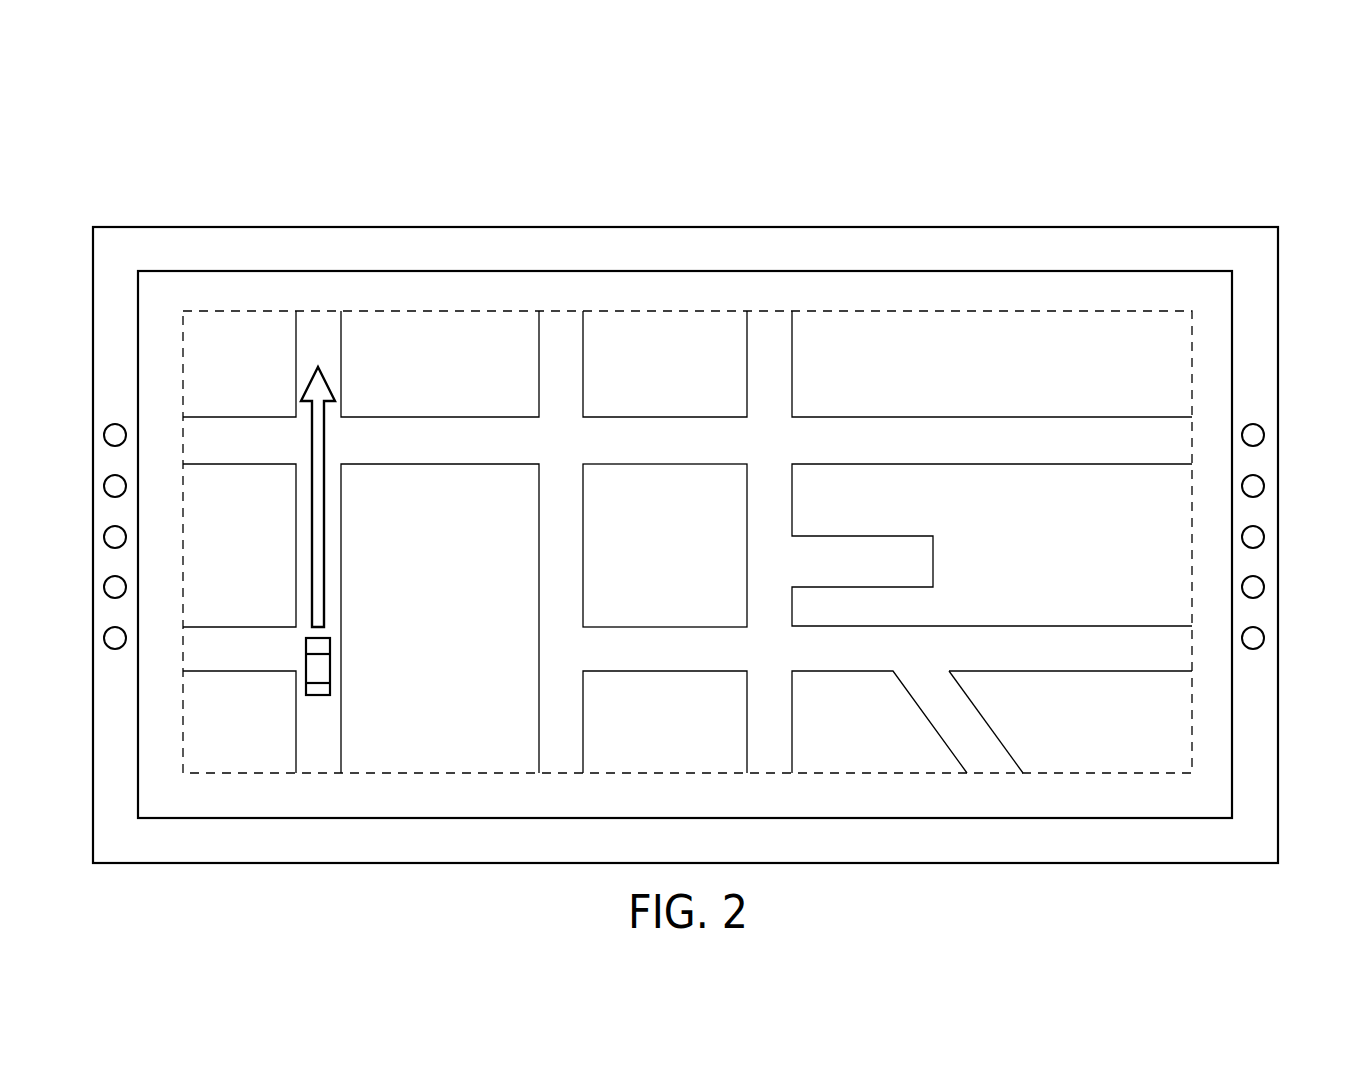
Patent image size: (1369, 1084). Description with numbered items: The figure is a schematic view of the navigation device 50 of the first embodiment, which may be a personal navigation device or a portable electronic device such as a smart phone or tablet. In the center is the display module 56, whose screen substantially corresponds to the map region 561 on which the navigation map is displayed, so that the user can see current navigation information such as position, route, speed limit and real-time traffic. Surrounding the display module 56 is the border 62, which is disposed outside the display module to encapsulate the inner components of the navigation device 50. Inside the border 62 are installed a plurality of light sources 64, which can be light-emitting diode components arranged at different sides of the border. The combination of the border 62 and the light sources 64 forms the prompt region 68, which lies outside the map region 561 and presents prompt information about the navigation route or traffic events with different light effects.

The navigation device 50 is at (1275, 142).
The display module 56 is at (1100, 272).
The map region 561 is at (917, 310).
The border 62 is at (1260, 388).
The light source 64 is at (104, 435).
The prompt region 68 is at (1327, 355).